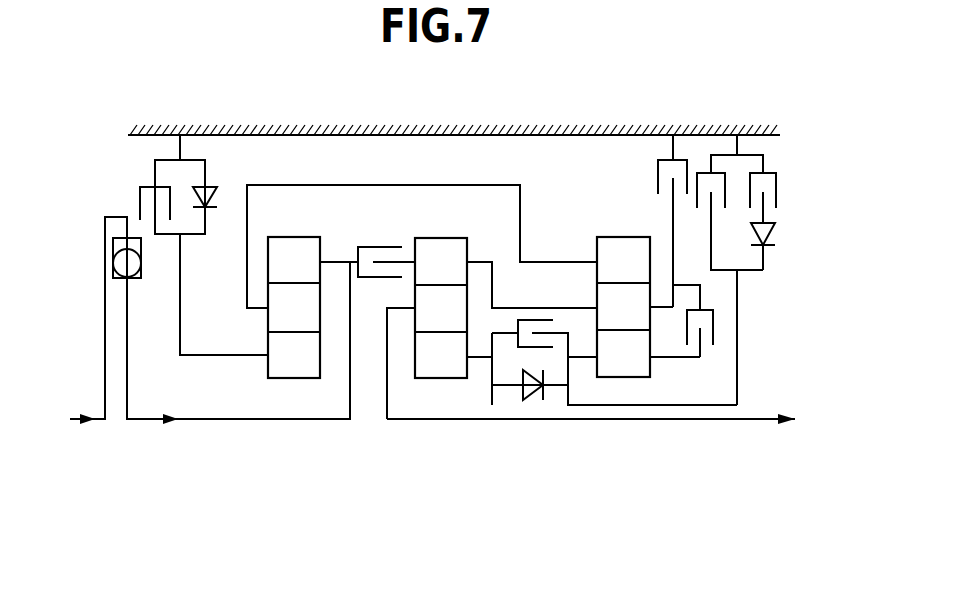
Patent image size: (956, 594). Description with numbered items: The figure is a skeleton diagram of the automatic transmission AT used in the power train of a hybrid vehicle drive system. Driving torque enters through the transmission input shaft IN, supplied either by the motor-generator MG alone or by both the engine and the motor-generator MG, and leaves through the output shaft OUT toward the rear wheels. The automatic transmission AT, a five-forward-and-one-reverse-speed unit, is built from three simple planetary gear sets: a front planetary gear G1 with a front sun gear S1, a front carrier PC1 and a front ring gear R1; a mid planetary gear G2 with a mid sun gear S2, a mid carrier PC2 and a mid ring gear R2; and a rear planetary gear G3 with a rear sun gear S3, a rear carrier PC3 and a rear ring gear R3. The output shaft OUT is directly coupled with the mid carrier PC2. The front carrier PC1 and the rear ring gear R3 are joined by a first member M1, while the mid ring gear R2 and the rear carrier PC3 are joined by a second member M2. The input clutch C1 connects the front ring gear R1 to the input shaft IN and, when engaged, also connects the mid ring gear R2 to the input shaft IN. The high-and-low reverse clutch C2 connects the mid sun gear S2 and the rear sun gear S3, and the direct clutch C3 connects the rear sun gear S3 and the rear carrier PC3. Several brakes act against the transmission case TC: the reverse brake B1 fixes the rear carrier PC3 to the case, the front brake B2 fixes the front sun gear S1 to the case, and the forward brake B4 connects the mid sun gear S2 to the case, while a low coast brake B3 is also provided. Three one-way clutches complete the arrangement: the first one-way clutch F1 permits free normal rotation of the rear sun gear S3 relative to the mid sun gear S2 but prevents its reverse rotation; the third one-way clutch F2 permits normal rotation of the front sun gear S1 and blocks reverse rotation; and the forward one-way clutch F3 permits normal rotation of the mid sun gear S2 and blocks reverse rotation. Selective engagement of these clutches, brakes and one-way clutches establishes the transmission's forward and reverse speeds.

The automatic transmission AT is at (147, 109).
The transmission case TC is at (408, 136).
The motor-generator MG is at (192, 324).
The transmission input shaft IN is at (225, 419).
The output shaft OUT is at (775, 394).
The reverse brake B1 is at (658, 221).
The front brake B2 is at (191, 245).
The low coast brake B3 is at (722, 270).
The forward brake B4 is at (776, 198).
The input clutch C1 is at (386, 250).
The high-and-low reverse clutch C2 is at (610, 358).
The direct clutch C3 is at (693, 334).
The first one-way clutch F1 is at (530, 381).
The third one-way clutch F2 is at (215, 184).
The forward one-way clutch F3 is at (776, 246).
The front planetary gear G1 is at (307, 282).
The mid planetary gear G2 is at (439, 303).
The rear planetary gear G3 is at (643, 281).
The first member M1 is at (358, 185).
The second member M2 is at (478, 262).
The front ring gear R1 is at (313, 266).
The front carrier PC1 is at (294, 315).
The front sun gear S1 is at (294, 361).
The mid ring gear R2 is at (441, 268).
The mid carrier PC2 is at (427, 358).
The mid sun gear S2 is at (453, 361).
The rear ring gear R3 is at (623, 266).
The rear carrier PC3 is at (635, 313).
The rear sun gear S3 is at (648, 360).